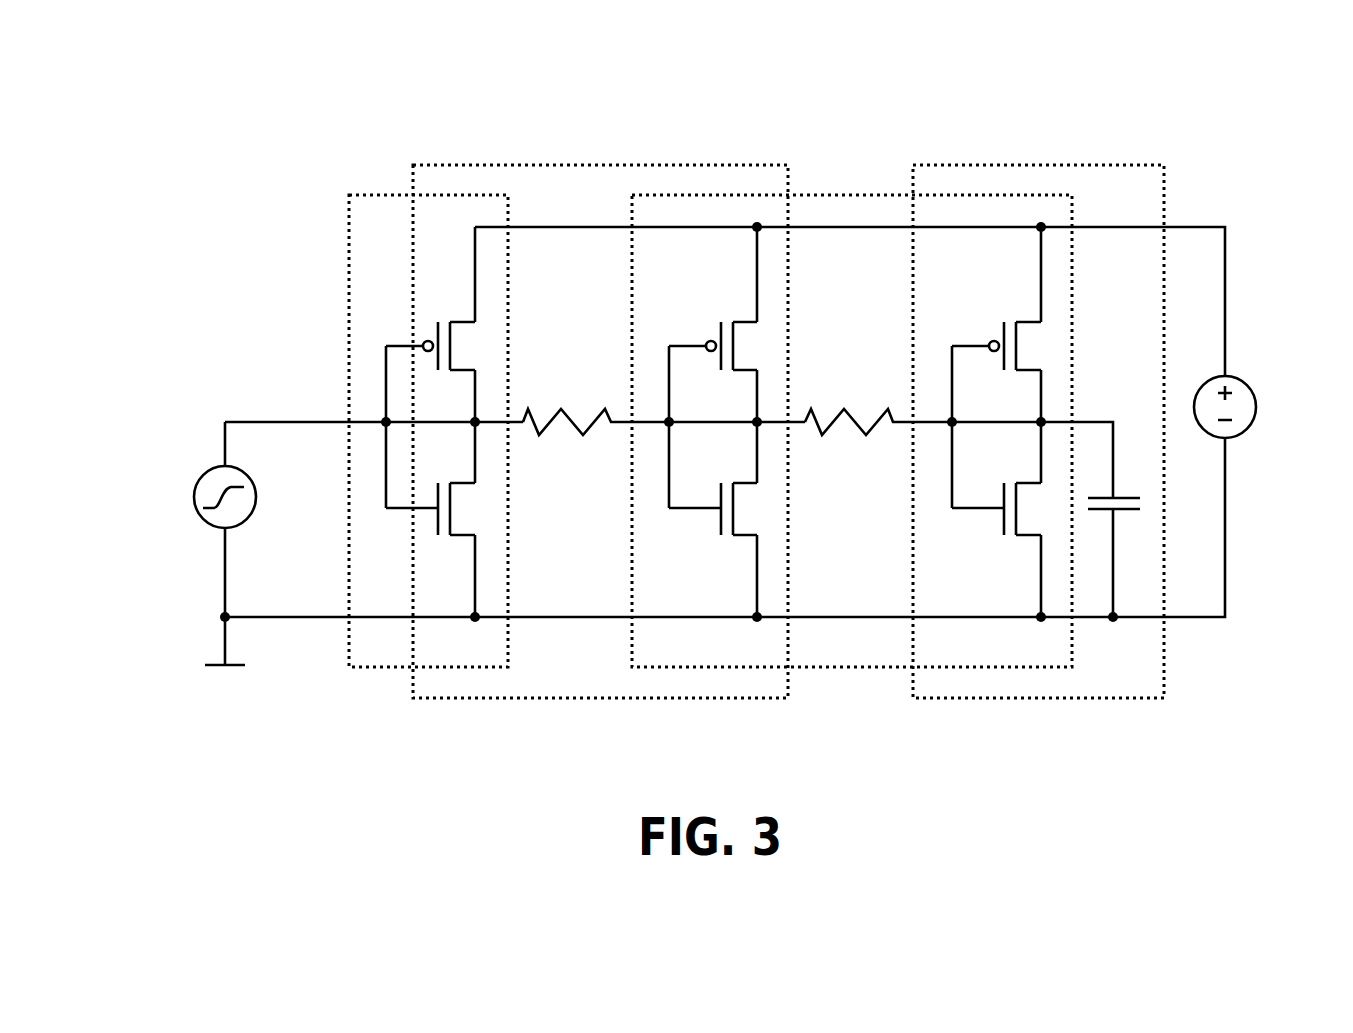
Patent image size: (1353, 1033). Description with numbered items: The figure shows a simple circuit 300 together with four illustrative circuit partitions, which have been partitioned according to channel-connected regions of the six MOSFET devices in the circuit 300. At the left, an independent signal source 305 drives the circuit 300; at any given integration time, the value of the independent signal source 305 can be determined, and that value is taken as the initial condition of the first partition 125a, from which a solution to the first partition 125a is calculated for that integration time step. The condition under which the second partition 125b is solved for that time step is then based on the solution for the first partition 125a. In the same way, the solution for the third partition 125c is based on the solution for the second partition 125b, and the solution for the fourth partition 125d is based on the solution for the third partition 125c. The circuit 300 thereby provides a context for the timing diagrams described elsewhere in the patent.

The circuit 300 is at (1185, 80).
The independent signal source 305 is at (209, 466).
The first partition 125a is at (363, 196).
The second partition 125b is at (521, 166).
The third partition 125c is at (852, 196).
The fourth partition 125d is at (1009, 166).